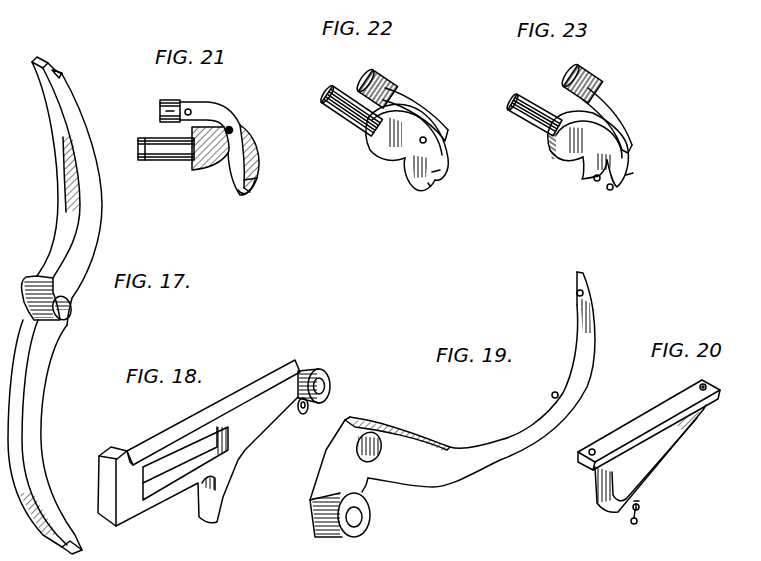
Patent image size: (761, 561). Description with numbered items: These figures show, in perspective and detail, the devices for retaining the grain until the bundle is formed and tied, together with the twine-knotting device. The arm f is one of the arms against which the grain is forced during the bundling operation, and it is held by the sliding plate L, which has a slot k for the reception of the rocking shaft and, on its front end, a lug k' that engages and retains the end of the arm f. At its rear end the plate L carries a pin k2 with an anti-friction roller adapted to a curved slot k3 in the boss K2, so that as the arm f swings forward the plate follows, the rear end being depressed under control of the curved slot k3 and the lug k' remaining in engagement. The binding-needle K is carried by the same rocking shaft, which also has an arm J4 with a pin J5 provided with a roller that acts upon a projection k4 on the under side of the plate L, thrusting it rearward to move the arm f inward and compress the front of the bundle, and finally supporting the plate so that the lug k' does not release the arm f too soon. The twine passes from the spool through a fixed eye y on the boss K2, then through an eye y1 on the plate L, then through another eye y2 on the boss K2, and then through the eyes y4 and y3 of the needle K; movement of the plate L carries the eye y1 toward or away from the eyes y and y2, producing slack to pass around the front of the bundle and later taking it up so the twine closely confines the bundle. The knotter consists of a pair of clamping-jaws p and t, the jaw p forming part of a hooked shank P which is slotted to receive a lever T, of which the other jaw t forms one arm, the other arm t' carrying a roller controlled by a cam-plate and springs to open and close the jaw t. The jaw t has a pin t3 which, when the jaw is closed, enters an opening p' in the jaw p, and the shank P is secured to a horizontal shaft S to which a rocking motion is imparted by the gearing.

In FIG. 17, the arm f is at (101, 191).
In FIG. 21, the horizontal shaft S is at (166, 149).
In FIG. 22, the horizontal shaft S is at (351, 110).
In FIG. 23, the horizontal shaft S is at (533, 113).
In FIG. 21, the lever arm t' is at (200, 109).
In FIG. 22, the lever arm t' is at (401, 102).
In FIG. 23, the lever arm t' is at (595, 106).
In FIG. 21, the lever T is at (243, 146).
In FIG. 22, the lever T is at (440, 118).
In FIG. 23, the lever T is at (627, 129).
In FIG. 21, the hooked shank P is at (210, 150).
In FIG. 22, the hooked shank P is at (407, 142).
In FIG. 23, the hooked shank P is at (588, 149).
In FIG. 21, the clamping-jaw t is at (241, 160).
In FIG. 22, the clamping-jaw t is at (417, 173).
In FIG. 23, the clamping-jaw t is at (591, 177).
In FIG. 21, the clamping-jaw p is at (257, 159).
In FIG. 22, the clamping-jaw p is at (441, 172).
In FIG. 23, the clamping-jaw p is at (634, 175).
In FIG. 21, the pin t3 is at (253, 181).
In FIG. 23, the pin t3 is at (596, 181).
In FIG. 21, the opening p' is at (256, 194).
In FIG. 22, the opening p' is at (433, 188).
In FIG. 23, the opening p' is at (618, 193).
In FIG. 18, the sliding plate L is at (199, 443).
In FIG. 18, the lug k' is at (125, 443).
In FIG. 18, the slot k is at (185, 463).
In FIG. 18, the curved slot k3 is at (153, 469).
In FIG. 20, the curved slot k3 is at (650, 458).
In FIG. 18, the projection k4 is at (217, 492).
In FIG. 18, the pin k2 is at (329, 384).
In FIG. 18, the eye y1 is at (309, 409).
In FIG. 19, the binding-needle K is at (470, 379).
In FIG. 19, the arm J4 is at (347, 460).
In FIG. 19, the pin J5 is at (368, 515).
In FIG. 19, the eye y3 is at (571, 295).
In FIG. 19, the eye y4 is at (552, 394).
In FIG. 20, the boss K2 is at (649, 425).
In FIG. 20, the fixed eye y is at (639, 508).
In FIG. 20, the eye y2 is at (637, 522).